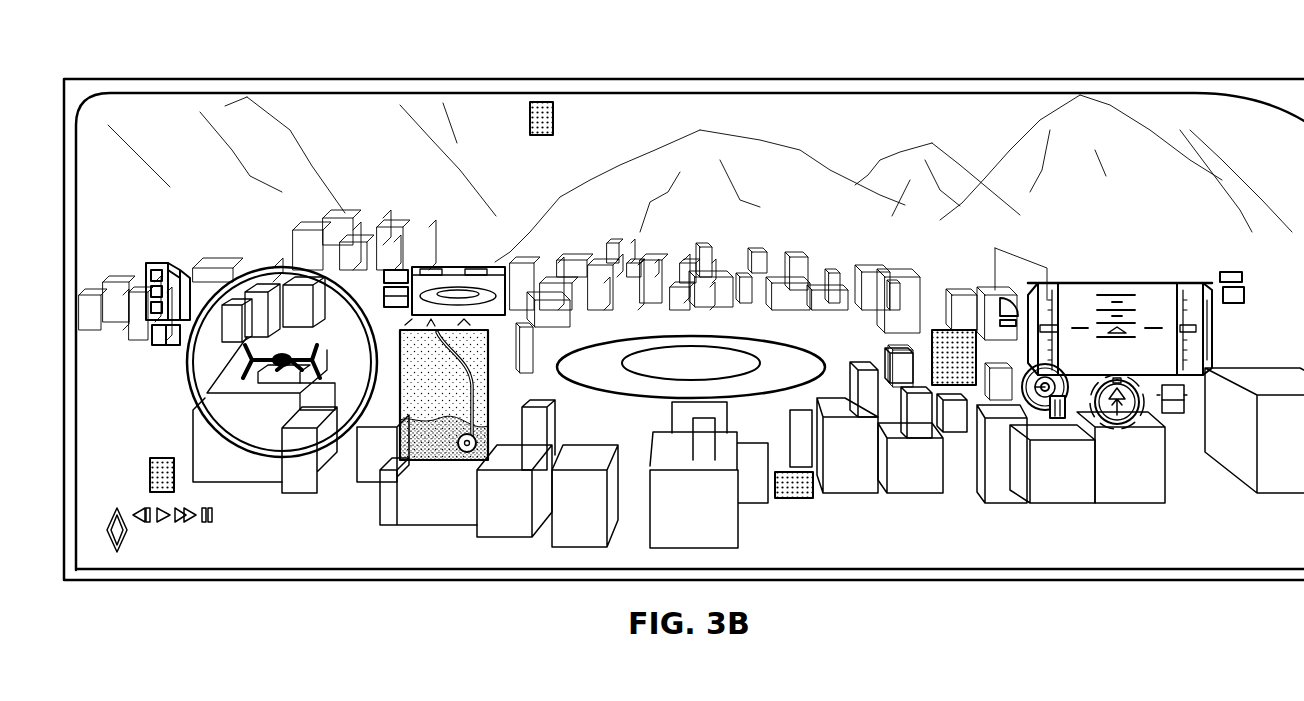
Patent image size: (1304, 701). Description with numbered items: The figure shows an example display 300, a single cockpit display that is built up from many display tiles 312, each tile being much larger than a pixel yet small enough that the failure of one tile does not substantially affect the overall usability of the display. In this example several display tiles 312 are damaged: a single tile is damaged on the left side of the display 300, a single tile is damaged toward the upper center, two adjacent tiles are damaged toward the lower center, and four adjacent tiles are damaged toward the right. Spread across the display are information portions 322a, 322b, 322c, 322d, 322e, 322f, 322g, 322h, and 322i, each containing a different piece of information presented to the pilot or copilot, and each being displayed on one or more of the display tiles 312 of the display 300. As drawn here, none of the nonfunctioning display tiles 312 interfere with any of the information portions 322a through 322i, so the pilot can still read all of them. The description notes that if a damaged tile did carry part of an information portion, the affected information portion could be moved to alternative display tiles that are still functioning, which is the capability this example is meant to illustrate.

The display 300 is at (399, 76).
The display tiles 312 is at (538, 137).
The information portion 322a is at (158, 262).
The information portion 322b is at (282, 269).
The information portion 322c is at (460, 266).
The information portion 322d is at (445, 462).
The information portion 322e is at (1048, 284).
The information portion 322f is at (1117, 291).
The information portion 322g is at (1185, 290).
The information portion 322h is at (1235, 308).
The information portion 322i is at (1117, 426).